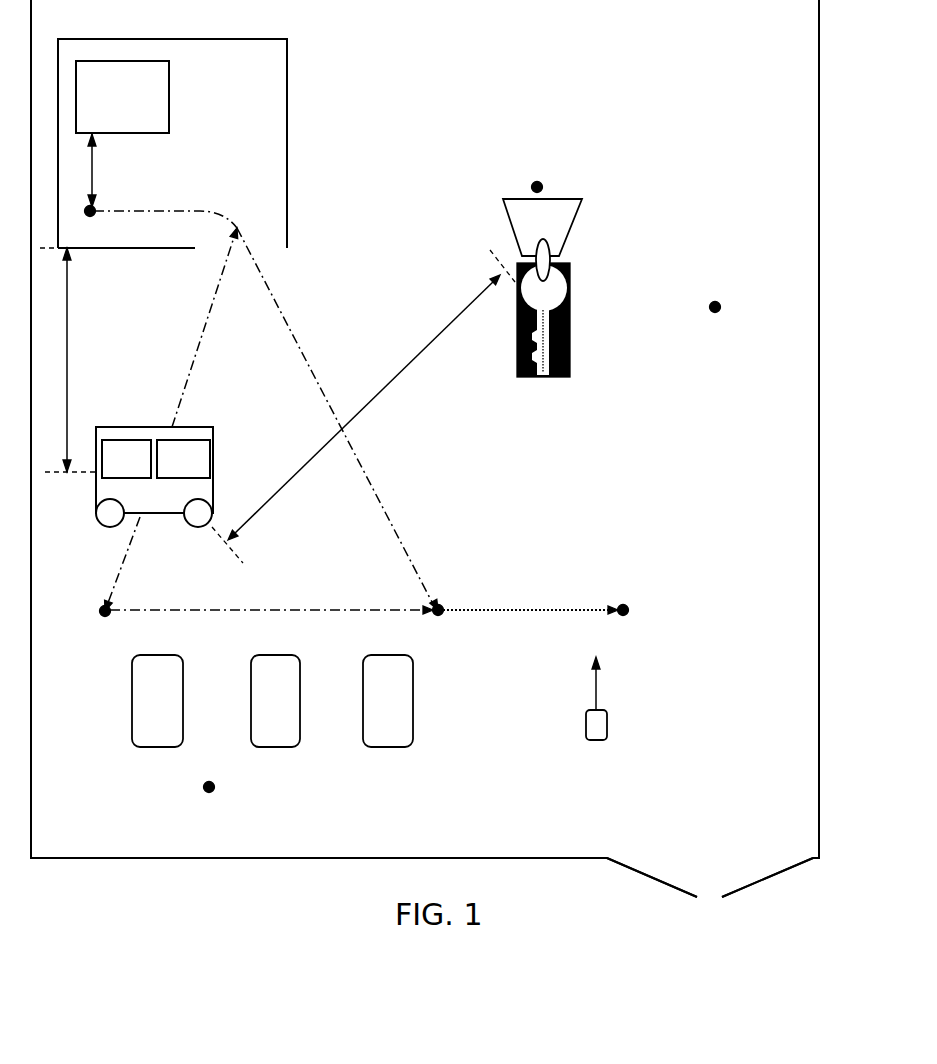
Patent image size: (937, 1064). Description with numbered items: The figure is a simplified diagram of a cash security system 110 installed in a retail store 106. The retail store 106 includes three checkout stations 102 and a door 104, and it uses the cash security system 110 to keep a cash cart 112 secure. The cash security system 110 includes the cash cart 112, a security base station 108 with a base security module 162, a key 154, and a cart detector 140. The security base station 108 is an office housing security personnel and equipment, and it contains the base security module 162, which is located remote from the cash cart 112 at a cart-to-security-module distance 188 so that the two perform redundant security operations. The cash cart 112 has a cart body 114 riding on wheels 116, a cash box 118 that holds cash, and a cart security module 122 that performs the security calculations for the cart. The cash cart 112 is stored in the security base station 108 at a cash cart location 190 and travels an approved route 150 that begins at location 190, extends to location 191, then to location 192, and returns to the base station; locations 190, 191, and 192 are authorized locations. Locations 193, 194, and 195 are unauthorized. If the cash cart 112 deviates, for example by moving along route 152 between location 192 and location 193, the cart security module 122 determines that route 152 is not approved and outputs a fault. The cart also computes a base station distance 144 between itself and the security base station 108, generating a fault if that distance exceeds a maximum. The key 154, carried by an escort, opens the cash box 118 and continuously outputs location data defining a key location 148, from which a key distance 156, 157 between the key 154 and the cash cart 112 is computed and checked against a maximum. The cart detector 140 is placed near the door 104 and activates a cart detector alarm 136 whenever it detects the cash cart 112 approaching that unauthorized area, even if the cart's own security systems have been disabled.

The checkout stations 102 is at (165, 692).
The door 104 is at (652, 875).
The retail store 106 is at (612, 35).
The security base station 108 is at (172, 143).
The cash security system 110 is at (528, 128).
The cash cart 112 is at (169, 466).
The cart body 114 is at (213, 467).
The wheel 116 is at (203, 506).
The cash box 118 is at (200, 471).
The cart security module 122 is at (142, 471).
The cart detector alarm 136 is at (597, 683).
The cart detector 140 is at (600, 720).
The base station distance 144 is at (68, 350).
The key location 148 is at (542, 183).
The route 150 is at (375, 495).
The route 152 is at (520, 610).
The key 154 is at (558, 232).
The key distance 156 is at (371, 395).
The signal 157 is at (383, 382).
The base security module 162 is at (132, 107).
The cart-to-security-module distance 188 is at (93, 168).
The cash cart location 190 is at (97, 210).
The location 191 is at (105, 617).
The location 192 is at (440, 604).
The location 193 is at (623, 604).
The location 194 is at (214, 786).
The location 195 is at (715, 301).